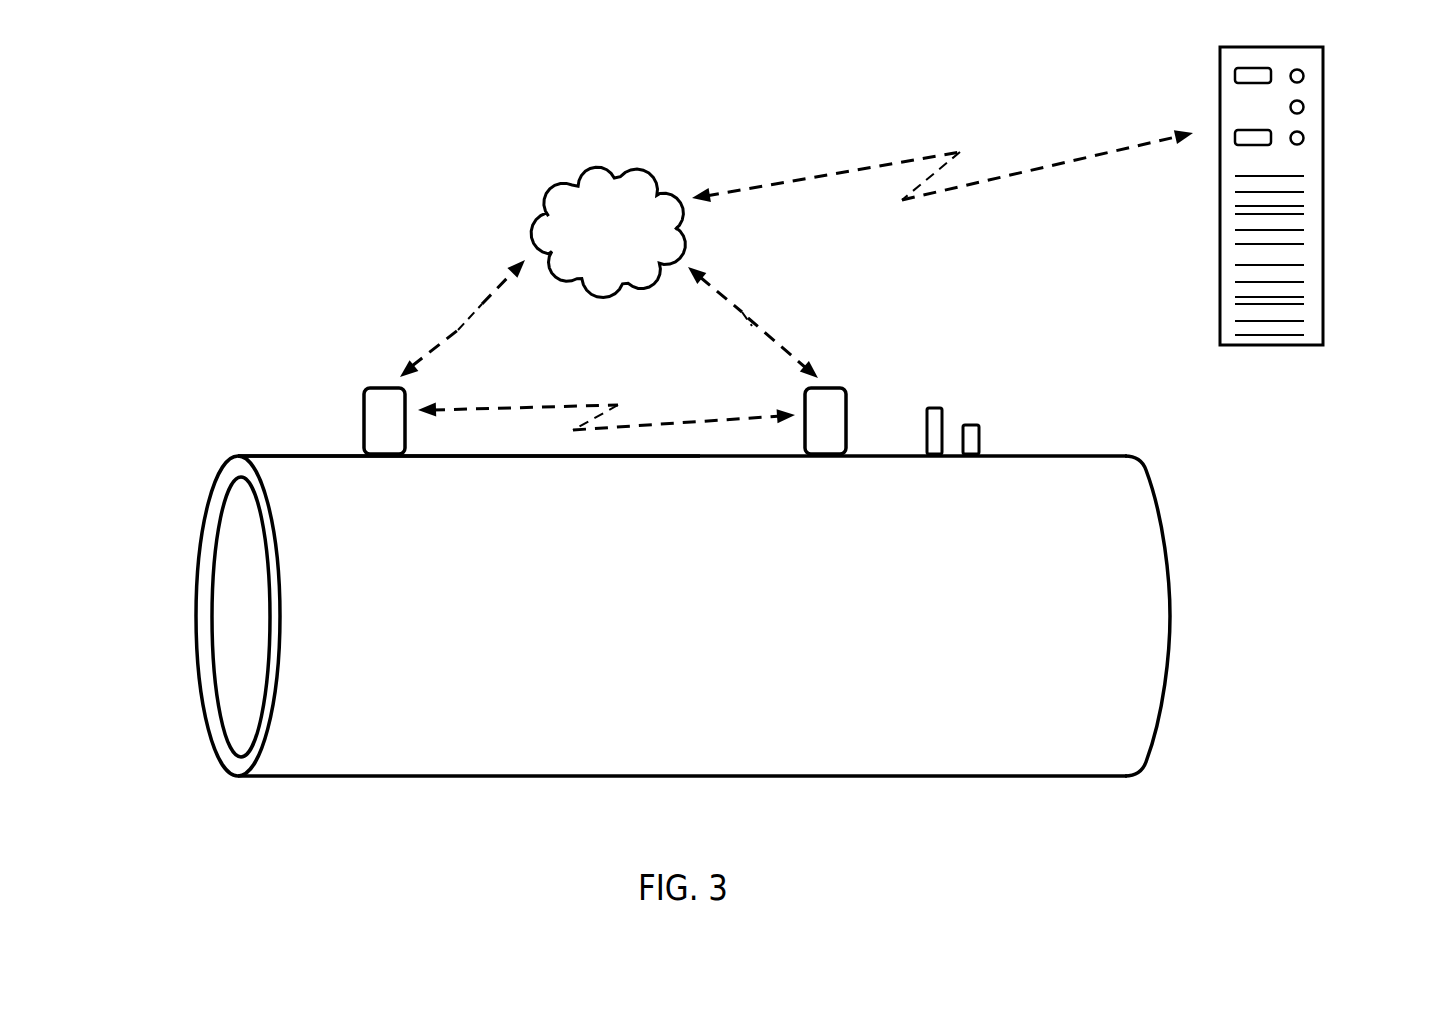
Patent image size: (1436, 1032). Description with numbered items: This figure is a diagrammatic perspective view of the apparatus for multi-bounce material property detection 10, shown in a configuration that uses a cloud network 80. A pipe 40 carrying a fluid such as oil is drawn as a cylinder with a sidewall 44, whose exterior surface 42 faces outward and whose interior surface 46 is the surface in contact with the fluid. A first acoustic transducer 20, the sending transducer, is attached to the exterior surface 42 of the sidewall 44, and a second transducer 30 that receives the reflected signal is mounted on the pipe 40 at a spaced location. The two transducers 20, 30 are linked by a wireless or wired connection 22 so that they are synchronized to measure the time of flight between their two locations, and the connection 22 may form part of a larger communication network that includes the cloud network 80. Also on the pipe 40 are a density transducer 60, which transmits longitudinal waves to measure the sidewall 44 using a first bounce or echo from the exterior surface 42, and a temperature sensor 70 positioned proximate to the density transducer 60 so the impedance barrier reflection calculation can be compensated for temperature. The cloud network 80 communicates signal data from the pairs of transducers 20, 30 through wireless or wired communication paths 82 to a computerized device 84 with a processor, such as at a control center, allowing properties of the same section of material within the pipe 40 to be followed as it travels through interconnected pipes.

The apparatus for multi-bounce material property detection 10 is at (222, 159).
The first acoustic transducer 20 is at (374, 387).
The wireless or wired connection 22 is at (482, 305).
The second transducer 30 is at (836, 387).
The pipe 40 is at (870, 642).
The exterior surface 42 is at (287, 440).
The sidewall 44 is at (235, 465).
The interior surface 46 is at (240, 500).
The density transducer 60 is at (942, 415).
The temperature sensor 70 is at (979, 440).
The cloud network 80 is at (628, 245).
The wireless or wired communication paths 82 is at (940, 152).
The computerized device 84 is at (1323, 202).